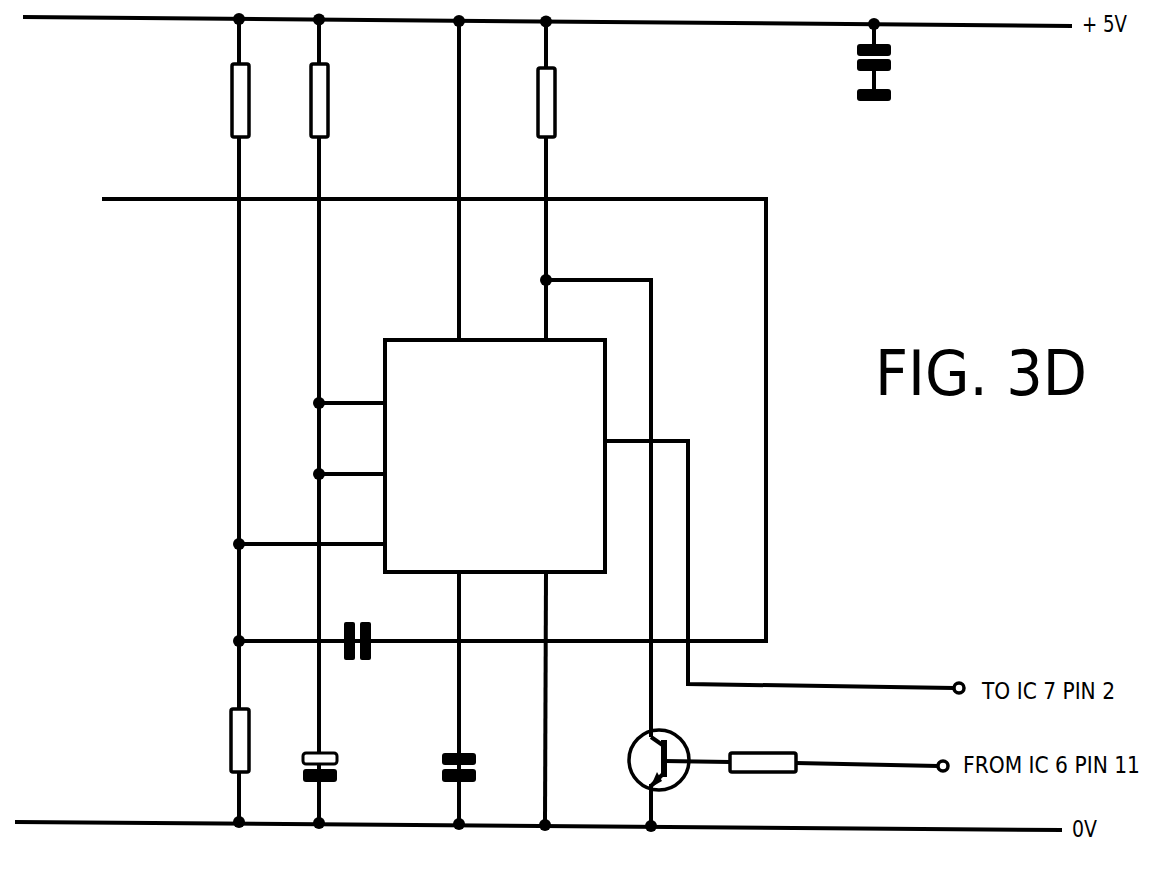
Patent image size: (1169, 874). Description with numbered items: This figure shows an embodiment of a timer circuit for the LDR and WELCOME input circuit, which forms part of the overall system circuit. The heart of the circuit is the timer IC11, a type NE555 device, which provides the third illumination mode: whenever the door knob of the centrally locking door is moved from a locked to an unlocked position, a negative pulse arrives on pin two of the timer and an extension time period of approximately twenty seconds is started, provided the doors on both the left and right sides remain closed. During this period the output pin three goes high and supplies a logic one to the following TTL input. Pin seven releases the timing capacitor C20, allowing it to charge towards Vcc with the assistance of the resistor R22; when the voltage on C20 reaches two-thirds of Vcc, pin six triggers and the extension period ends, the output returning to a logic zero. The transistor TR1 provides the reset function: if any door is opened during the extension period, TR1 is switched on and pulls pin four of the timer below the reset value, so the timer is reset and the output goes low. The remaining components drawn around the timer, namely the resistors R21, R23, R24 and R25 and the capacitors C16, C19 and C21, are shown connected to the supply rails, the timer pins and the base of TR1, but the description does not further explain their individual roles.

The timer IC IC11 is at (495, 456).
The resistor R21 is at (264, 100).
The resistor R22 is at (347, 100).
The resistor R23 is at (569, 102).
The resistor R24 is at (801, 734).
The resistor R25 is at (264, 739).
The capacitor C16 is at (841, 71).
The capacitor C19 is at (385, 621).
The timing capacitor C20 is at (355, 760).
The capacitor C21 is at (487, 737).
The transistor TR1 is at (628, 760).